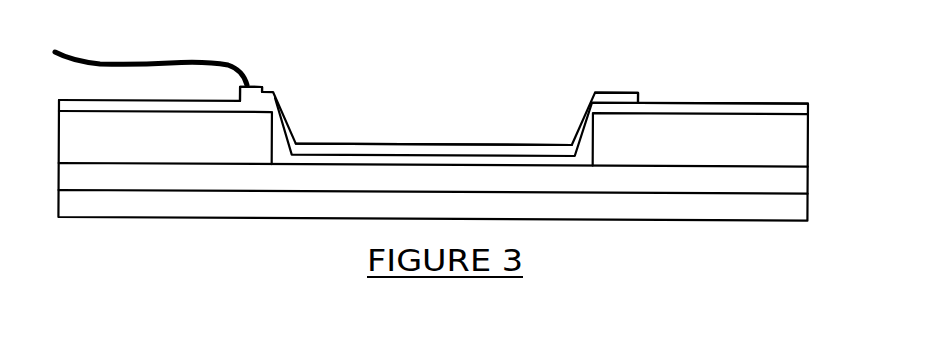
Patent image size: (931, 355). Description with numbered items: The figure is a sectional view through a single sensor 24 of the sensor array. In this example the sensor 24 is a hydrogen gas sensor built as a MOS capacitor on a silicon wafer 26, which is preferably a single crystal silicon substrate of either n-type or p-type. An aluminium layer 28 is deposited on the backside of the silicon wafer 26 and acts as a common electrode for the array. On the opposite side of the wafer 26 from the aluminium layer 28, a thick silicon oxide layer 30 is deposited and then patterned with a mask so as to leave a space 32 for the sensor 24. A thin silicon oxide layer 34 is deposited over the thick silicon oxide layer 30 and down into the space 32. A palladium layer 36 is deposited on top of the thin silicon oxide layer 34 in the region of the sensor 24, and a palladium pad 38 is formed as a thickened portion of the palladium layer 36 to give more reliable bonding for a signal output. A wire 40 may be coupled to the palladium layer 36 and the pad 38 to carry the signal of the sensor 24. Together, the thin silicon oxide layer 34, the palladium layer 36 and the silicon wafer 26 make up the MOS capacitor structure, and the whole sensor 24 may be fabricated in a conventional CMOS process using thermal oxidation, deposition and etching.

The sensor 24 is at (500, 40).
The silicon wafer 26 is at (810, 178).
The aluminium layer 28 is at (810, 210).
The thick silicon oxide layer 30 is at (810, 136).
The space 32 is at (416, 106).
The thin silicon oxide layer 34 is at (728, 103).
The palladium layer 36 is at (622, 92).
The palladium pad 38 is at (252, 82).
The wire 40 is at (200, 60).